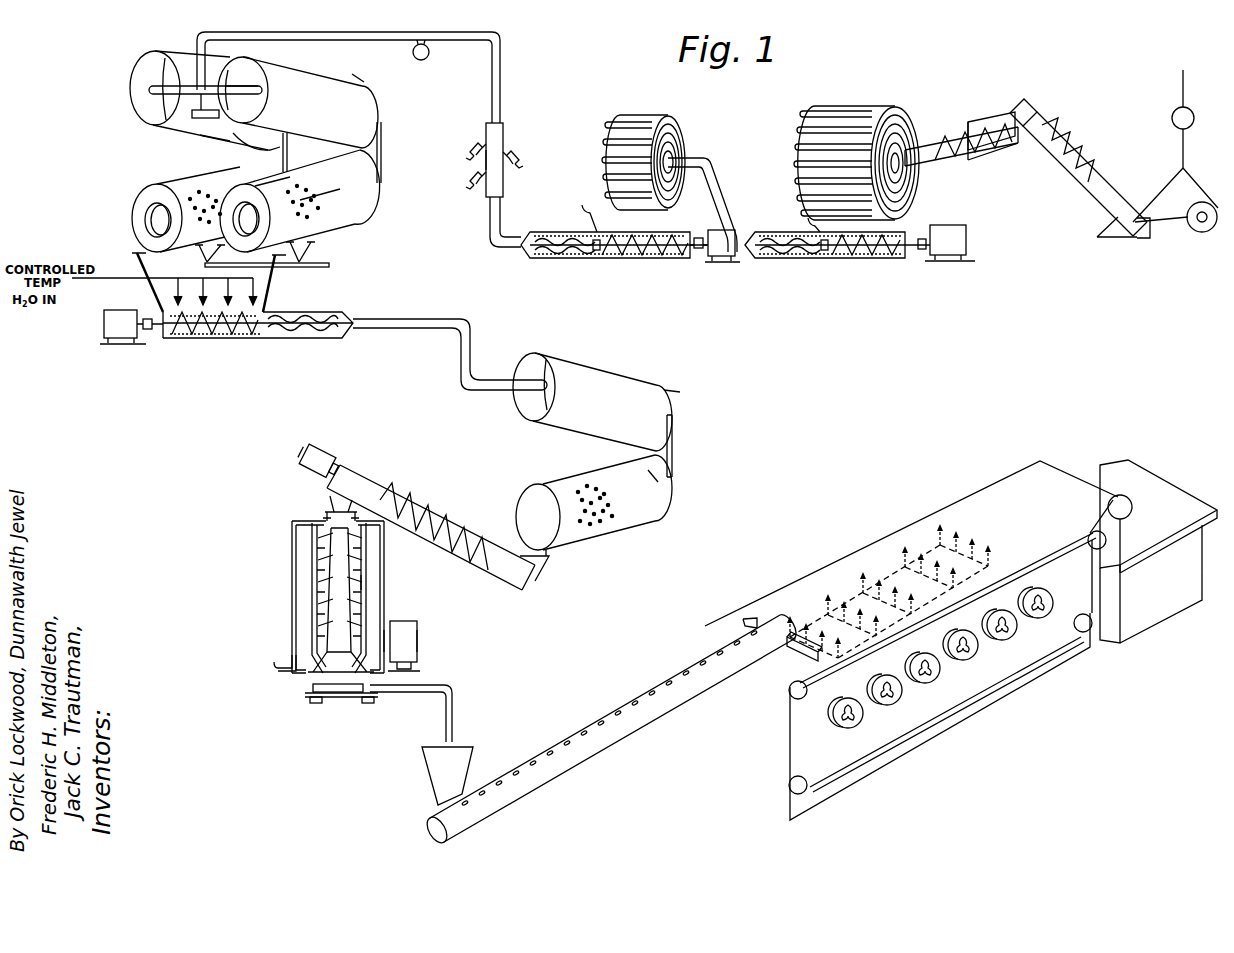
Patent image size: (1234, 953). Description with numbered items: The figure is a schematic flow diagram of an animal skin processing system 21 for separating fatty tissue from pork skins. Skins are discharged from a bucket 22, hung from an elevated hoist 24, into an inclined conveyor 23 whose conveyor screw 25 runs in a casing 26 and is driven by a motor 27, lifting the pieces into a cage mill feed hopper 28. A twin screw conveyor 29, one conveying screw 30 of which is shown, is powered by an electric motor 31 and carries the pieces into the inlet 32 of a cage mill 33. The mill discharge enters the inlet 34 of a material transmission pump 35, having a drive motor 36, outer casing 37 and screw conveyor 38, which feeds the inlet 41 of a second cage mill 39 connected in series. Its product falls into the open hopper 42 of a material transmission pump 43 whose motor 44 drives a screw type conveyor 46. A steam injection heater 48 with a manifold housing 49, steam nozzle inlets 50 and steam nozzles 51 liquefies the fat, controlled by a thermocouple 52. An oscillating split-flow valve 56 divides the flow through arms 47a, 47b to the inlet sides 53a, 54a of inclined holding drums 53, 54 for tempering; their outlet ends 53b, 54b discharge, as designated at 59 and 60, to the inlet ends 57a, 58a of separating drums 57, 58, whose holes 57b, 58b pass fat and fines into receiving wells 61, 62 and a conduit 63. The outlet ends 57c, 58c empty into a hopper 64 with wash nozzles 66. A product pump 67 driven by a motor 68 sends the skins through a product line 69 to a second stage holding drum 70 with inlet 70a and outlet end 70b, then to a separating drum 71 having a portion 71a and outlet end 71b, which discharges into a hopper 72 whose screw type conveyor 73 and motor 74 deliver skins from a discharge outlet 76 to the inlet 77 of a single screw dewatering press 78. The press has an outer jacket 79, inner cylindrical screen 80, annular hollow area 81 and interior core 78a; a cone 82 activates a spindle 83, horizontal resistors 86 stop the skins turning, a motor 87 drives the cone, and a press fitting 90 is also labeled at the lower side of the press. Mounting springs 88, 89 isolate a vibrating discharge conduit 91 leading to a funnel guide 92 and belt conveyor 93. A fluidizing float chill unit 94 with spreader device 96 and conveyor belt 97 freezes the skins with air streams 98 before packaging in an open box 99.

The animal skin processing system 21 is at (786, 118).
The bucket 22 is at (1192, 190).
The inclined conveyor 23 is at (1082, 184).
The elevated hoist 24 is at (1172, 119).
The conveyor screw 25 is at (1068, 142).
The casing 26 is at (1026, 100).
The motor 27 is at (1150, 232).
The cage mill feed hopper 28 is at (970, 120).
The twin screw conveyor 29 is at (940, 160).
The conveying screw 30 is at (970, 150).
The electric motor 31 is at (1010, 144).
The inlet 32 is at (900, 175).
The cage mill 33 is at (898, 107).
The inlet 34 is at (806, 218).
The material transmission pump 35 is at (843, 259).
The drive motor 36 is at (968, 252).
The outer casing 37 is at (790, 259).
The screw conveyor 38 is at (890, 258).
The second cage mill 39 is at (624, 116).
The inlet 41 is at (672, 160).
The open hopper 42 is at (580, 206).
The material transmission pump 43 is at (580, 259).
The motor 44 is at (712, 258).
The screw type conveyor 46 is at (626, 257).
The arm of T-shaped member 47a is at (168, 84).
The arm of T-shaped member 47b is at (255, 86).
The steam injection heater 48 is at (506, 140).
The manifold housing 49 is at (503, 134).
The steam nozzle inlets 50 is at (478, 146).
The steam nozzles 51 is at (476, 180).
The thermocouple 52 is at (428, 58).
The holding drum 53 is at (131, 83).
The inlet side 53a is at (146, 63).
The outlet end 53b is at (226, 142).
The holding drum 54 is at (366, 92).
The inlet side 54a is at (233, 70).
The outlet end 54b is at (360, 74).
The oscillating split-flow valve 56 is at (200, 98).
The separating drum 57 is at (188, 186).
The inlet end 57a is at (292, 175).
The holes 57b is at (192, 202).
The outlet end 57c is at (147, 218).
The separating drum 58 is at (352, 218).
The inlet end 58a is at (365, 183).
The holes 58b is at (316, 200).
The outlet end 58c is at (258, 220).
The transfer designation 59 is at (289, 145).
The transfer designation 60 is at (382, 145).
The receiving well 61 is at (199, 256).
The receiving well 62 is at (308, 254).
The conduit 63 is at (327, 266).
The hopper 64 is at (270, 282).
The nozzles 66 is at (218, 336).
The product pump 67 is at (262, 335).
The motor 68 is at (121, 344).
The product line 69 is at (408, 319).
The second stage holding drum 70 is at (610, 372).
The inlet 70a is at (546, 362).
The outlet end 70b is at (680, 391).
The separating drum 71 is at (640, 520).
The separating drum portion 71a is at (672, 494).
The outlet end 71b is at (524, 490).
The hopper 72 is at (675, 440).
The screw type conveyor 73 is at (418, 508).
The motor 74 is at (318, 450).
The discharge outlet 76 is at (328, 500).
The inlet 77 is at (326, 516).
The single screw dewatering press 78 is at (292, 583).
The interior core 78a is at (300, 650).
The outer jacket 79 is at (380, 590).
The inner cylindrical screen 80 is at (362, 550).
The annular hollow area 81 is at (363, 572).
The cone 82 is at (318, 678).
The spindle 83 is at (320, 538).
The horizontal resistors 86 is at (320, 552).
The motor 87 is at (418, 641).
The mounting spring 88 is at (312, 703).
The mounting spring 89 is at (374, 703).
The drain pipe 90 is at (274, 662).
The vibrating discharge conduit 91 is at (452, 690).
The funnel guide 92 is at (462, 755).
The belt conveyor 93 is at (520, 792).
The fluidizing float chill unit 94 is at (945, 702).
The spreader device 96 is at (745, 618).
The conveyor belt 97 is at (803, 593).
The air streams 98 is at (830, 598).
The open box 99 is at (1148, 622).